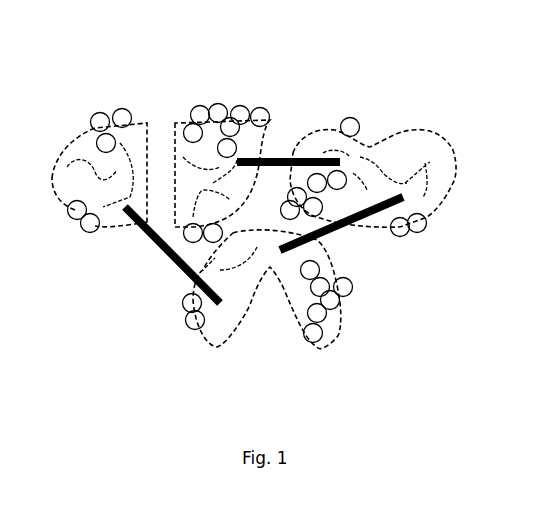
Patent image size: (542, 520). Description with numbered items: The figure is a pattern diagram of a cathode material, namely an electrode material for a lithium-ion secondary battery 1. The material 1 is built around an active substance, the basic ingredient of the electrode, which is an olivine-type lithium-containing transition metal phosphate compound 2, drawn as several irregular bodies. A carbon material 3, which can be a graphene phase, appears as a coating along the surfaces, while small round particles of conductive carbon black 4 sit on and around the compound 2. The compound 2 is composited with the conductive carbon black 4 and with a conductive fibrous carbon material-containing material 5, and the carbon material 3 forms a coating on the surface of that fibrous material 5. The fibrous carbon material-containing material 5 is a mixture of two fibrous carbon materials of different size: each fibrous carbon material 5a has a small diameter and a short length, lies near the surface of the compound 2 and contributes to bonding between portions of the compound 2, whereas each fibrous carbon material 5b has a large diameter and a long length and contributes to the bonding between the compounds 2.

The electrode material for a lithium-ion secondary battery 1 is at (328, 97).
The olivine-type lithium-containing transition metal phosphate compound 2 is at (142, 117).
The carbon material 3 is at (58, 115).
The conductive carbon black 4 is at (88, 232).
The conductive fibrous carbon material-containing material 5 is at (485, 270).
The fibrous carbon material 5a is at (430, 200).
The fibrous carbon material 5b is at (380, 243).